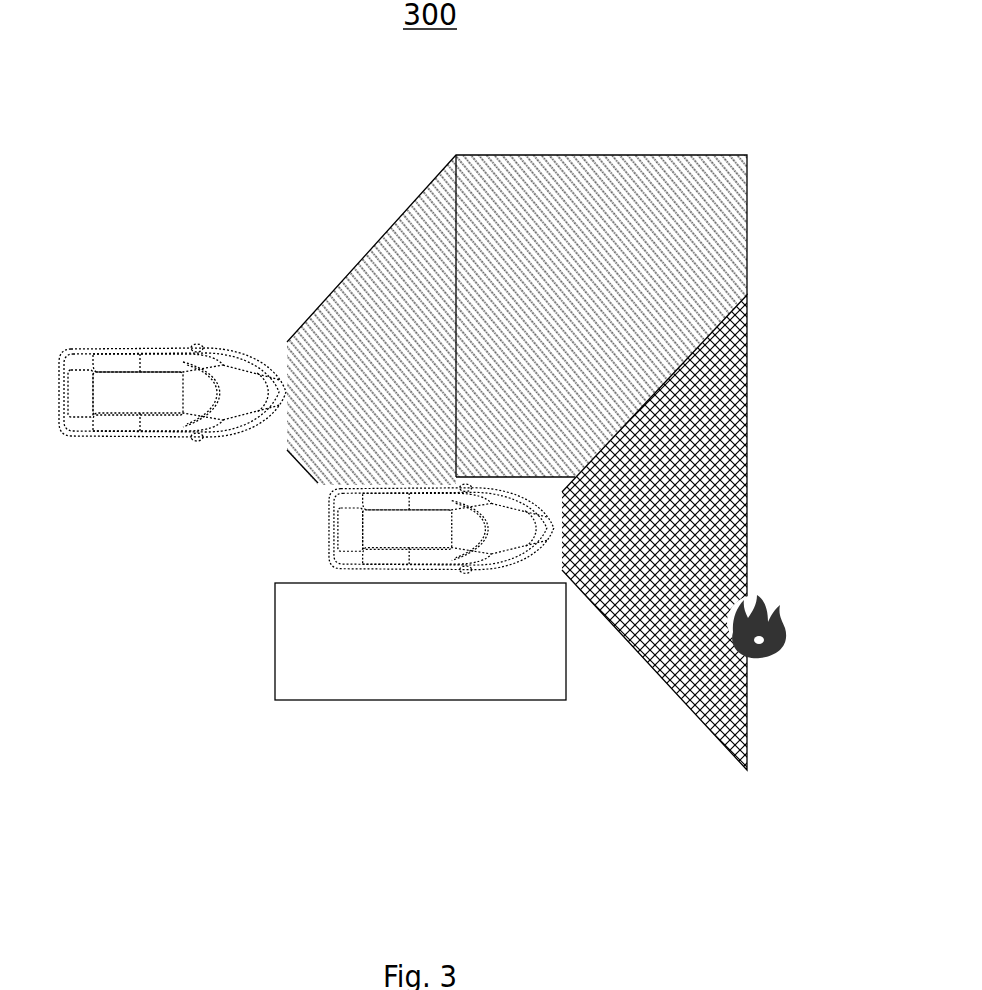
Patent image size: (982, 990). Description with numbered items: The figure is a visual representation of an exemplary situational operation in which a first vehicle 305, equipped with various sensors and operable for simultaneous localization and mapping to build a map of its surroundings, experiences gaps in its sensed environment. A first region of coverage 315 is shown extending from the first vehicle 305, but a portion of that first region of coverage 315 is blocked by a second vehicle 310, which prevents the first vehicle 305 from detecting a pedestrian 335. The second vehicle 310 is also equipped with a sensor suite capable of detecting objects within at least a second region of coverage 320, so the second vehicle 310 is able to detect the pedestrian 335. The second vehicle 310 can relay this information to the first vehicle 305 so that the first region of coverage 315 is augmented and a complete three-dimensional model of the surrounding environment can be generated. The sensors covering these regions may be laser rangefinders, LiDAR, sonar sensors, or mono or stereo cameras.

The first vehicle 305 is at (171, 342).
The second vehicle 310 is at (319, 532).
The first region of coverage 315 is at (329, 288).
The second region of coverage 320 is at (593, 620).
The pedestrian 335 is at (784, 595).